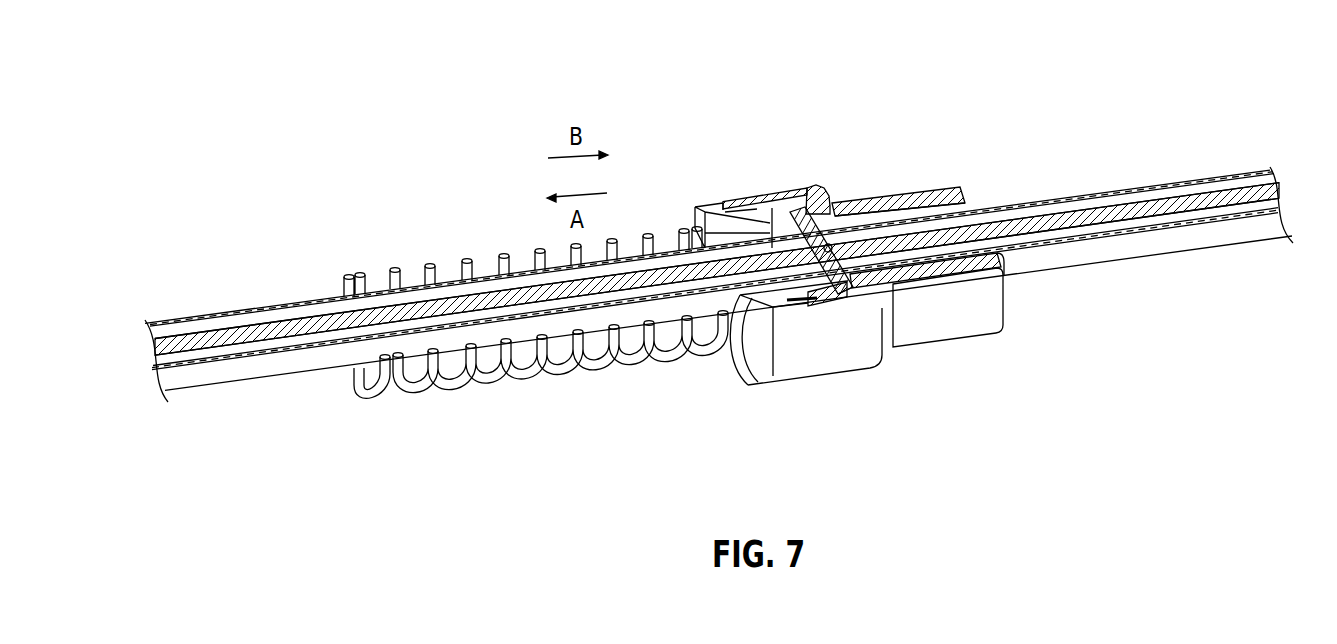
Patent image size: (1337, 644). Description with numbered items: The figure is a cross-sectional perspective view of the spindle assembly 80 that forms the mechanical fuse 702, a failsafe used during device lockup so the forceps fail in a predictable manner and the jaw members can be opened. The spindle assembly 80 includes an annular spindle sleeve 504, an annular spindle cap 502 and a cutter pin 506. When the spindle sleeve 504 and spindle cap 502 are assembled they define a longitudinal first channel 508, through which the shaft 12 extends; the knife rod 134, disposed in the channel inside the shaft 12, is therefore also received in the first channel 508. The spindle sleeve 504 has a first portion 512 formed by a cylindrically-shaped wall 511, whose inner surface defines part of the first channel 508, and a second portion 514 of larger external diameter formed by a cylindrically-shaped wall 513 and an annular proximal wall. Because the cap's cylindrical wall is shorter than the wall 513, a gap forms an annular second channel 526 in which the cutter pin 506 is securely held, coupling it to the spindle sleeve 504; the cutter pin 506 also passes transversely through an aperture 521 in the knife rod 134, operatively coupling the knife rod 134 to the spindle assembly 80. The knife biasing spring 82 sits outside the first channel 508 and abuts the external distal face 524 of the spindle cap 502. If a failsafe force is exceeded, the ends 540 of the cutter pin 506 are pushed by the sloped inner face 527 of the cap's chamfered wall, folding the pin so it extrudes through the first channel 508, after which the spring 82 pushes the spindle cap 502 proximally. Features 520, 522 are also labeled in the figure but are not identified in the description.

The shaft 12 is at (1196, 250).
The spindle assembly 80 is at (824, 145).
The knife biasing spring 82 is at (430, 262).
The knife rod 134 is at (1103, 212).
The spindle cap 502 is at (703, 192).
The spindle sleeve 504 is at (940, 147).
The cutter pin 506 is at (818, 195).
The first channel 508 is at (1238, 212).
The cylindrically-shaped wall 511 is at (988, 312).
The first portion 512 is at (933, 346).
The cylindrically-shaped wall 513 is at (788, 360).
The second portion 514 is at (830, 298).
The groove 520 is at (816, 304).
The aperture 521 is at (850, 232).
The upper housing portion 522 is at (767, 198).
The external distal face 524 is at (733, 367).
The second channel 526 is at (840, 199).
The inner face 527 is at (783, 198).
The ends 540 is at (790, 200).
The mechanical fuse 702 is at (955, 85).